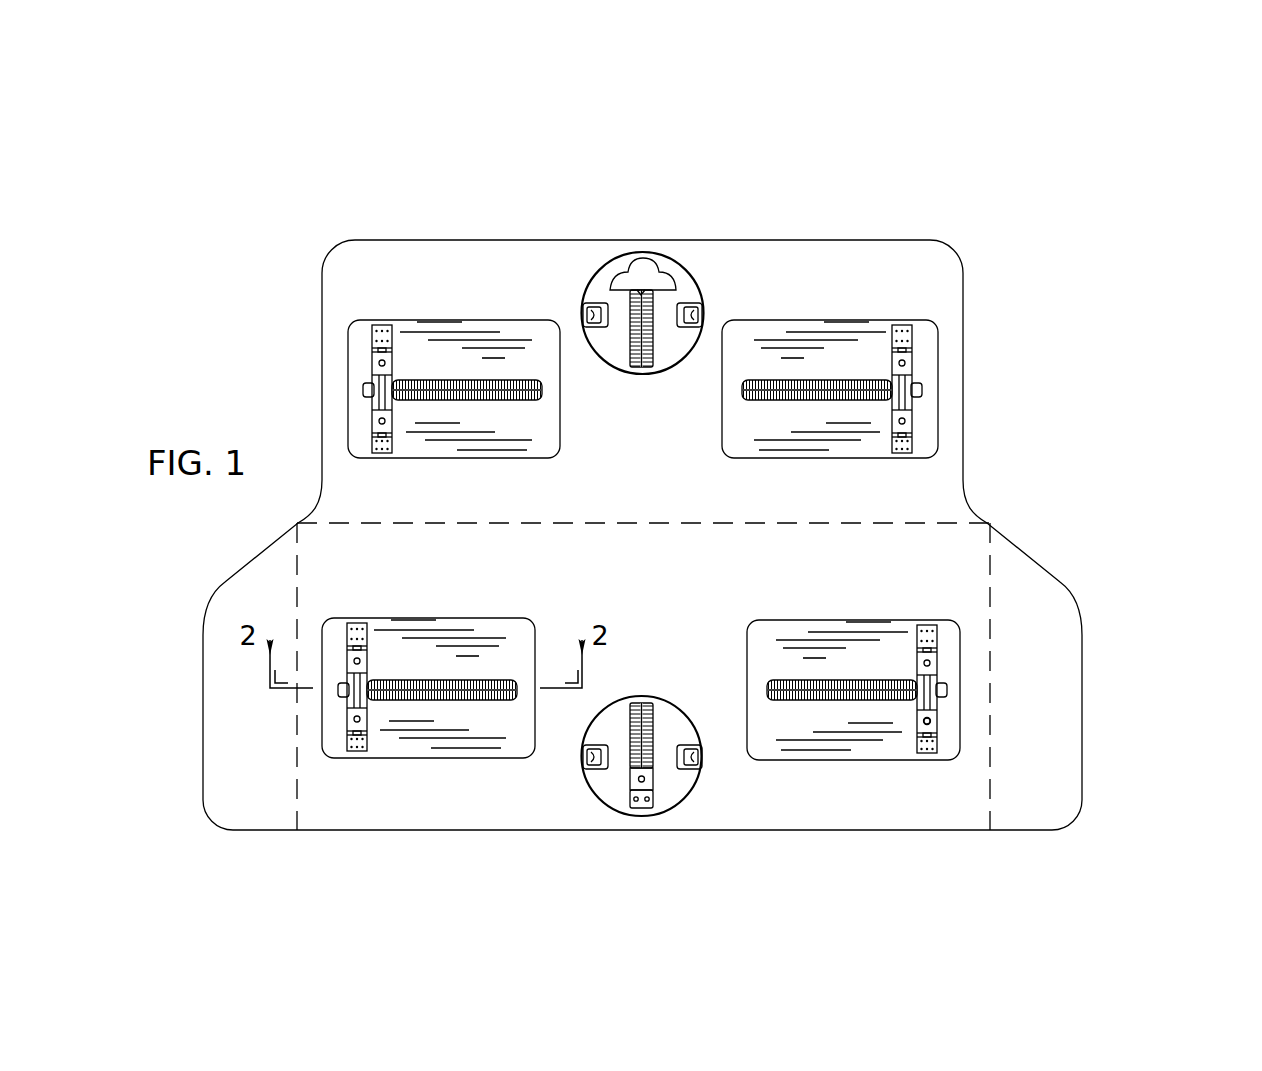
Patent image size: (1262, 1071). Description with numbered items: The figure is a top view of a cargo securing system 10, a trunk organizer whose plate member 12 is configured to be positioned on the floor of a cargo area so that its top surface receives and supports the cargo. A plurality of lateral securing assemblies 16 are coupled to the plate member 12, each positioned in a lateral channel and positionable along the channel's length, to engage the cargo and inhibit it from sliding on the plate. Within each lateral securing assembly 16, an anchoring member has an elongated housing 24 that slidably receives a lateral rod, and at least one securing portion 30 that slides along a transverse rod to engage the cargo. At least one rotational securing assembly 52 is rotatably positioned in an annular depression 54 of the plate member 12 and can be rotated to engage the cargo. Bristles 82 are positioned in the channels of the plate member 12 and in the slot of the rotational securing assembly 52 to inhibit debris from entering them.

The cargo securing system 10 is at (982, 233).
The plate member 12 is at (808, 240).
The lateral securing assembly 16 is at (325, 302).
The elongated housing 24 is at (940, 677).
The securing portion 30 is at (930, 720).
The rotational securing assembly 52 is at (664, 243).
The annular depression 54 is at (683, 268).
The bristles 82 is at (498, 383).